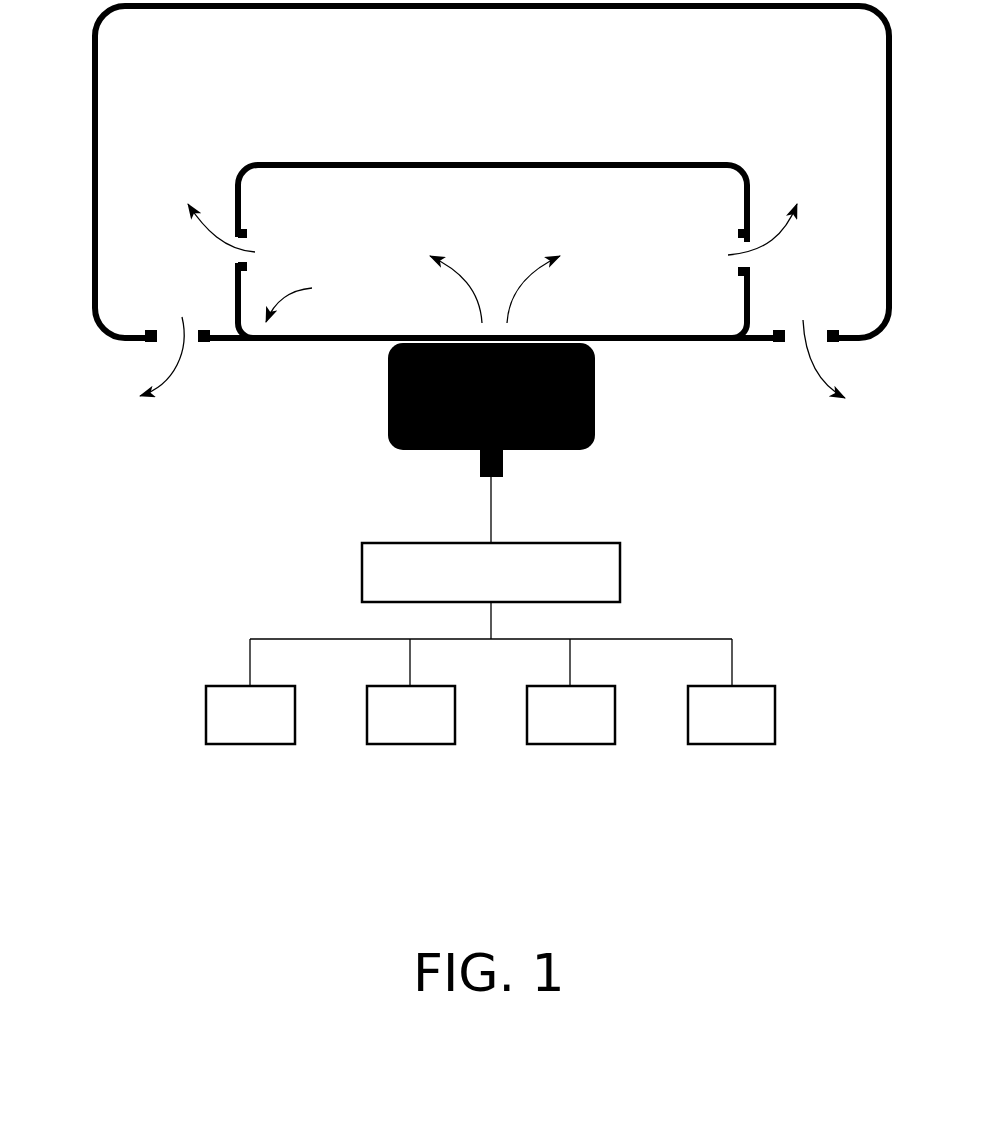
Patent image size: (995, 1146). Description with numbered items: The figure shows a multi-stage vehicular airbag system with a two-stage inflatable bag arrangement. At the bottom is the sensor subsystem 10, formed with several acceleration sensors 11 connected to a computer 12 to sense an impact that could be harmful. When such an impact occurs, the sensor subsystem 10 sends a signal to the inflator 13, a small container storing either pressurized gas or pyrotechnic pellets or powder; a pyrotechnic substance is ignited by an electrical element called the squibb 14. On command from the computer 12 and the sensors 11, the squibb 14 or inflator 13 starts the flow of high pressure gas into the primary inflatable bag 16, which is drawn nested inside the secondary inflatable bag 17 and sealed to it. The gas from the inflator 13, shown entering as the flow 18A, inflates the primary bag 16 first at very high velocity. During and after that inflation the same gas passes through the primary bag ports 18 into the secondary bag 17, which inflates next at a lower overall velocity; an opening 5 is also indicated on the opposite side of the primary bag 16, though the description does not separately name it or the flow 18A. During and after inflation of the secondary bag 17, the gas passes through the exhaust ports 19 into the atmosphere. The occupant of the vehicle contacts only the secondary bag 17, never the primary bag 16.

The left outlet gap of inner housing 5 is at (258, 263).
The sensor subsystem 10 is at (812, 717).
The sensors 11 is at (410, 744).
The computer 12 is at (620, 577).
The inflator 13 is at (595, 403).
The squibb 14 is at (478, 470).
The primary inflatable bag 16 is at (567, 162).
The secondary inflatable bag 17 is at (92, 145).
The primary bag ports 18 is at (737, 247).
The air discharge flow 18A is at (531, 322).
The exhaust ports 19 is at (165, 330).